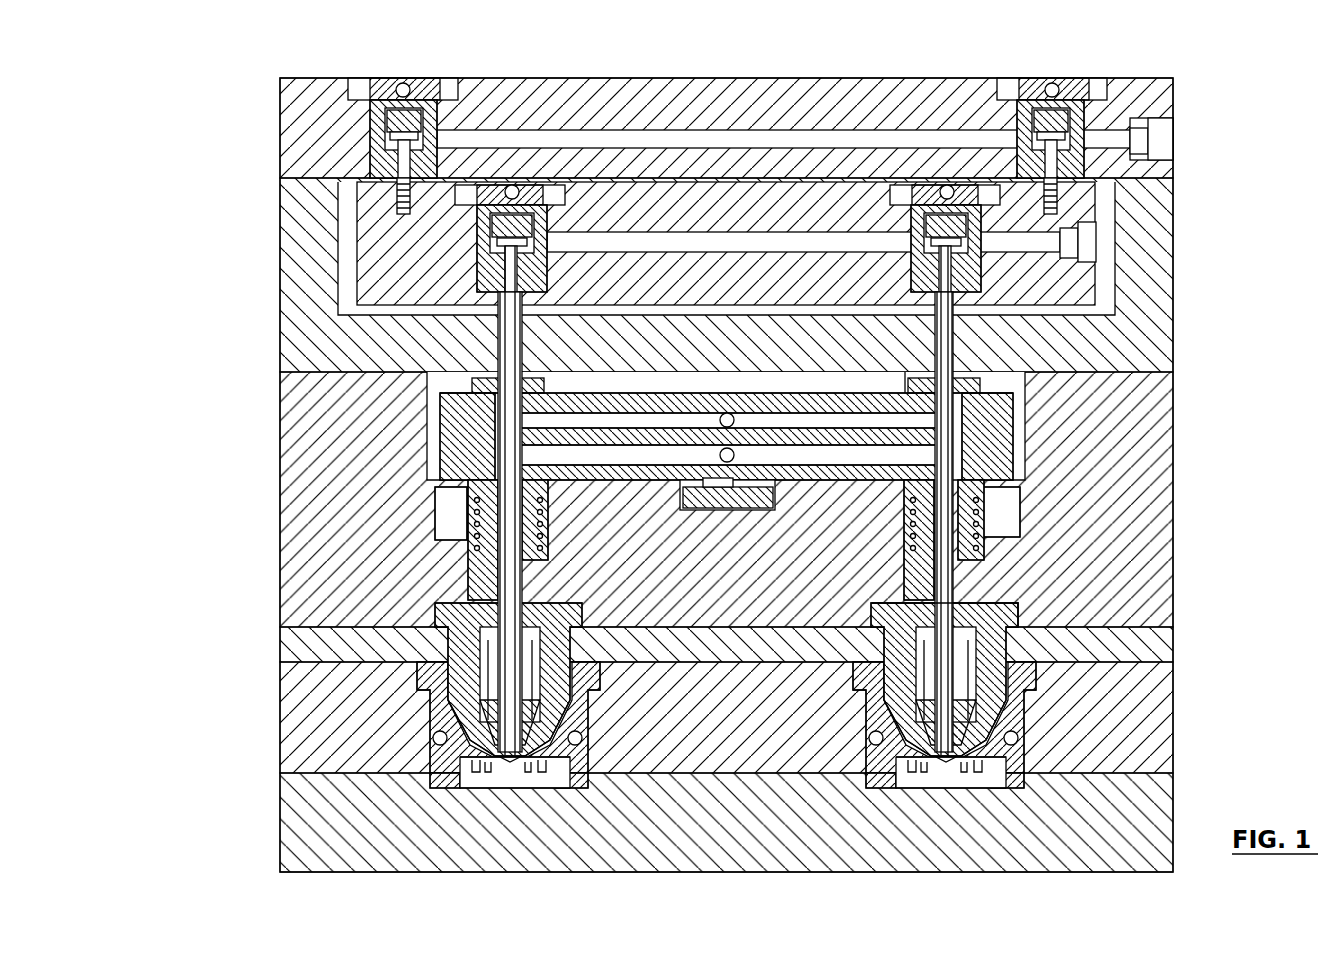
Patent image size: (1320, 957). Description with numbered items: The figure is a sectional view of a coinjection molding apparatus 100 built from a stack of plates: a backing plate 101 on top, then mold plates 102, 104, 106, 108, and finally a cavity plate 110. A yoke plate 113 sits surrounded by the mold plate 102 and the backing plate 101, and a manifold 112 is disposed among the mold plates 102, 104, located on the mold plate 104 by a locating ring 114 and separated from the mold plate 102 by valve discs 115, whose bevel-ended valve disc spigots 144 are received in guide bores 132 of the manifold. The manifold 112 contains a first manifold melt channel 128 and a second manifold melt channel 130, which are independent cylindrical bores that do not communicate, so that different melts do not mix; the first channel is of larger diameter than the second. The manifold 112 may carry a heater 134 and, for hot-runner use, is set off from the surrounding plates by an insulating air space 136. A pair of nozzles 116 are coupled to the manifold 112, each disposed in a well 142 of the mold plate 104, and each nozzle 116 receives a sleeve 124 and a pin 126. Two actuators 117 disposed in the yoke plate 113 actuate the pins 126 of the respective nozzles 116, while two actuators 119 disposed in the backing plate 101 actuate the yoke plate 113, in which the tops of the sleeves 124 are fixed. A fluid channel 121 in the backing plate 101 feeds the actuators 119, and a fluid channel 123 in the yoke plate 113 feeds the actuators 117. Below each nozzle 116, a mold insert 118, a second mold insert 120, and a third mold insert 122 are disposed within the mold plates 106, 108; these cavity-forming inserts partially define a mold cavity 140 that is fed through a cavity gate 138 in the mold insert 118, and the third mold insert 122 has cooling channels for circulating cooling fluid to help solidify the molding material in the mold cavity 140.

The coinjection molding apparatus 100 is at (230, 80).
The backing plate 101 is at (280, 125).
The mold plate 102 is at (280, 285).
The mold plate 104 is at (280, 483).
The mold plate 106 is at (280, 660).
The mold plate 108 is at (280, 727).
The cavity plate 110 is at (280, 820).
The manifold 112 is at (445, 432).
The yoke plate 113 is at (357, 215).
The locating ring 114 is at (705, 505).
The valve discs 115 is at (455, 380).
The nozzle 116 is at (475, 565).
The actuator 117 is at (535, 185).
The mold insert 118 is at (882, 625).
The actuator 119 is at (430, 80).
The second mold insert 120 is at (455, 635).
The fluid channel 121 is at (1172, 140).
The third mold insert 122 is at (418, 693).
The fluid channel 123 is at (1097, 240).
The sleeve 124 is at (492, 595).
The pin 126 is at (498, 590).
The first manifold melt channel 128 is at (830, 420).
The second manifold melt channel 130 is at (742, 455).
The guide bores 132 is at (480, 490).
The heater 134 is at (970, 405).
The insulating air space 136 is at (1012, 440).
The cavity gate 138 is at (520, 765).
The mold cavity 140 is at (500, 765).
The well 142 is at (440, 515).
The valve disc spigots 144 is at (962, 388).